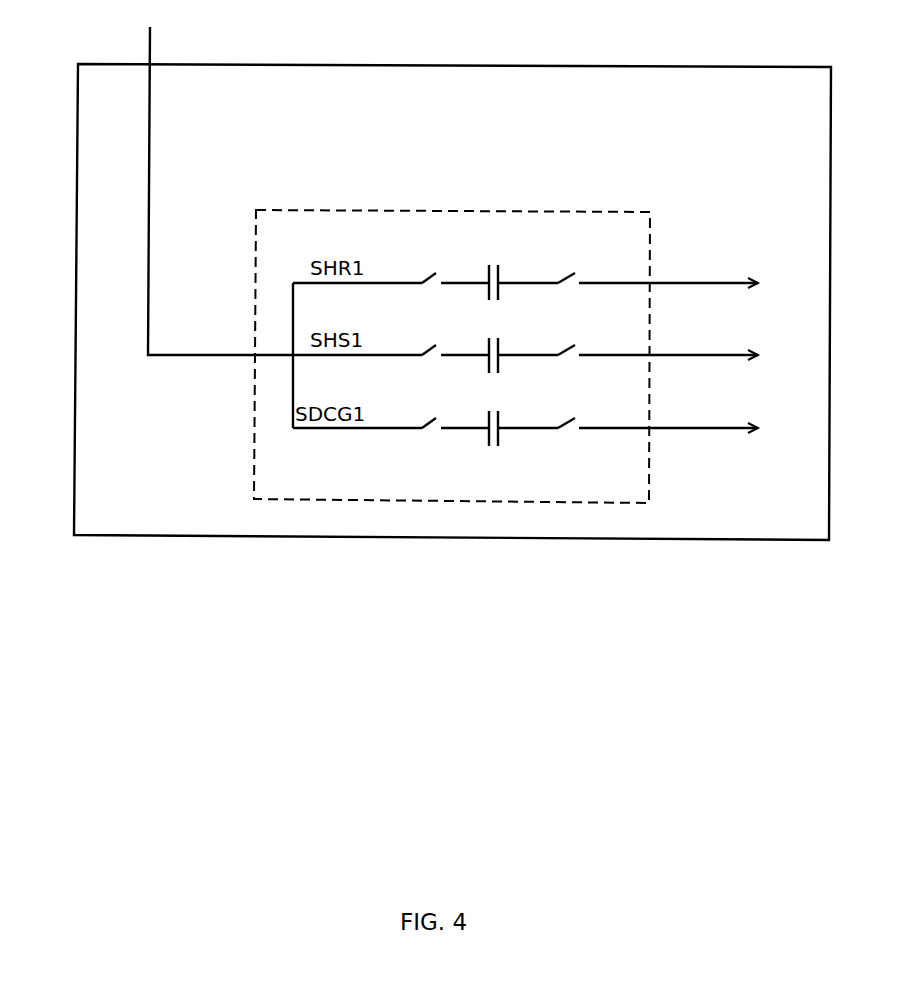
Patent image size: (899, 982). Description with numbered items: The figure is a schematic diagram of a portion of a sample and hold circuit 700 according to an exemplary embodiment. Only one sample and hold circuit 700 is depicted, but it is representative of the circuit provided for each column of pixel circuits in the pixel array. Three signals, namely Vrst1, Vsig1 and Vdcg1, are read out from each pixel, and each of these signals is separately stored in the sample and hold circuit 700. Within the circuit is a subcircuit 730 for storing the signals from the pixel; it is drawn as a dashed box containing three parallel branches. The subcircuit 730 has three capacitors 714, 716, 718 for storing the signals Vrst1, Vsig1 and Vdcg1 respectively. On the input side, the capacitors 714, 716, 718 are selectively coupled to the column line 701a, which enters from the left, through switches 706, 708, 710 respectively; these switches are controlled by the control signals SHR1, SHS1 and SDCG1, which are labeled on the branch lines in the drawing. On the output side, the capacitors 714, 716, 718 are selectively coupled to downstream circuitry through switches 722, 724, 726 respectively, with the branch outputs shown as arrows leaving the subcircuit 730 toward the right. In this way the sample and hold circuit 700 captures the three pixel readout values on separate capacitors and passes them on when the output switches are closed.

The sample and hold circuit 700 is at (832, 83).
The column line 701a is at (148, 318).
The switch 706 is at (432, 289).
The switch 708 is at (432, 362).
The switch 710 is at (432, 435).
The capacitor 714 is at (520, 260).
The capacitor 716 is at (520, 333).
The capacitor 718 is at (520, 405).
The switch 722 is at (586, 280).
The switch 724 is at (577, 352).
The switch 726 is at (595, 408).
The subcircuit 730 is at (651, 230).